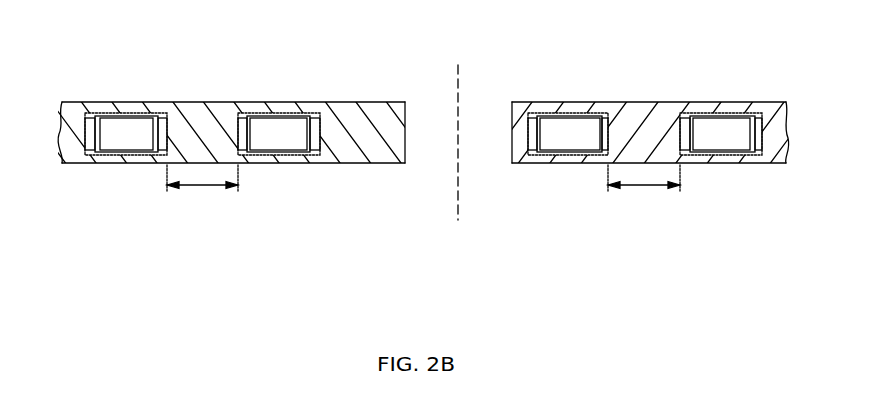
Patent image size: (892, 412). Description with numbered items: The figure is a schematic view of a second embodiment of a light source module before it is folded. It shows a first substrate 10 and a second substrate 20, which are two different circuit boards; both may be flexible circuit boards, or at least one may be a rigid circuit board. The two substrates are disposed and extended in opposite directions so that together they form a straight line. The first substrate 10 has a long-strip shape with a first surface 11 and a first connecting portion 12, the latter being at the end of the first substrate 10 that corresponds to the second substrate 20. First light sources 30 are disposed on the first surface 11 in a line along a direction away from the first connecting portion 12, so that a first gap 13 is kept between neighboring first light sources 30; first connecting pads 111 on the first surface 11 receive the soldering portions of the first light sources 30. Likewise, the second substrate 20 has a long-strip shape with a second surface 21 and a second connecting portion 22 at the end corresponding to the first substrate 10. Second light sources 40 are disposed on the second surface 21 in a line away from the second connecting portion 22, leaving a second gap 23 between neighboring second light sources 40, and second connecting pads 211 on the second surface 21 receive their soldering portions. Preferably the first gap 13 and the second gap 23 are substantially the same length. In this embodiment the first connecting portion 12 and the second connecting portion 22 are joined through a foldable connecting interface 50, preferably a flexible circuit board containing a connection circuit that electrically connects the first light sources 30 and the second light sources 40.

The first substrate 10 is at (216, 134).
The first surface 11 is at (223, 115).
The first connecting pads 111 is at (90, 141).
The first connecting portion 12 is at (405, 147).
The first gap 13 is at (202, 190).
The first light source 30 is at (283, 125).
The foldable connecting interface 50 is at (479, 114).
The second substrate 20 is at (652, 136).
The second surface 21 is at (622, 113).
The second connecting pads 211 is at (757, 145).
The second connecting portion 22 is at (527, 145).
The second gap 23 is at (644, 190).
The second light source 40 is at (550, 125).